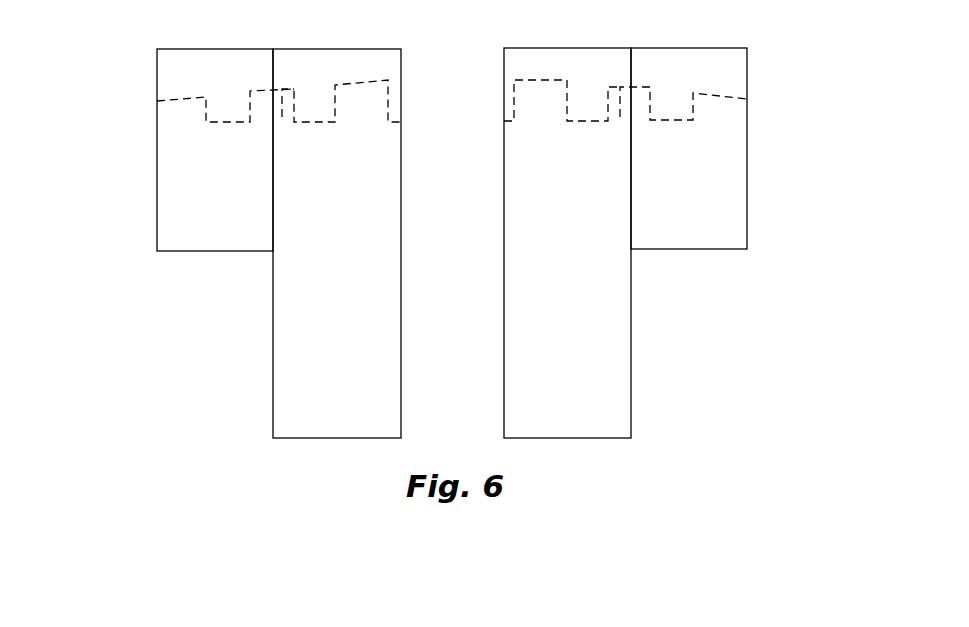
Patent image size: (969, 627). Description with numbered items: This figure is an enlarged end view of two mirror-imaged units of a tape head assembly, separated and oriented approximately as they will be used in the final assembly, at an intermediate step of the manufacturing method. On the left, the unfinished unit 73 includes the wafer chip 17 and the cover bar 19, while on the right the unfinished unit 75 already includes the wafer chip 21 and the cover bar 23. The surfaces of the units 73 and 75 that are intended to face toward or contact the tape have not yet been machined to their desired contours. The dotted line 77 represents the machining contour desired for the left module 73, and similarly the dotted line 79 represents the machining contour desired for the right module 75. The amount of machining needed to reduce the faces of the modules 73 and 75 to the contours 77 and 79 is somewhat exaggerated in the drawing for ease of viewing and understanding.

The wafer chip 17 is at (262, 347).
The cover bar 19 is at (146, 220).
The wafer chip 21 is at (641, 347).
The cover bar 23 is at (757, 218).
The unfinished unit 73 is at (226, 225).
The unfinished unit 75 is at (675, 224).
The dotted line 77 is at (204, 86).
The dotted line 79 is at (625, 65).